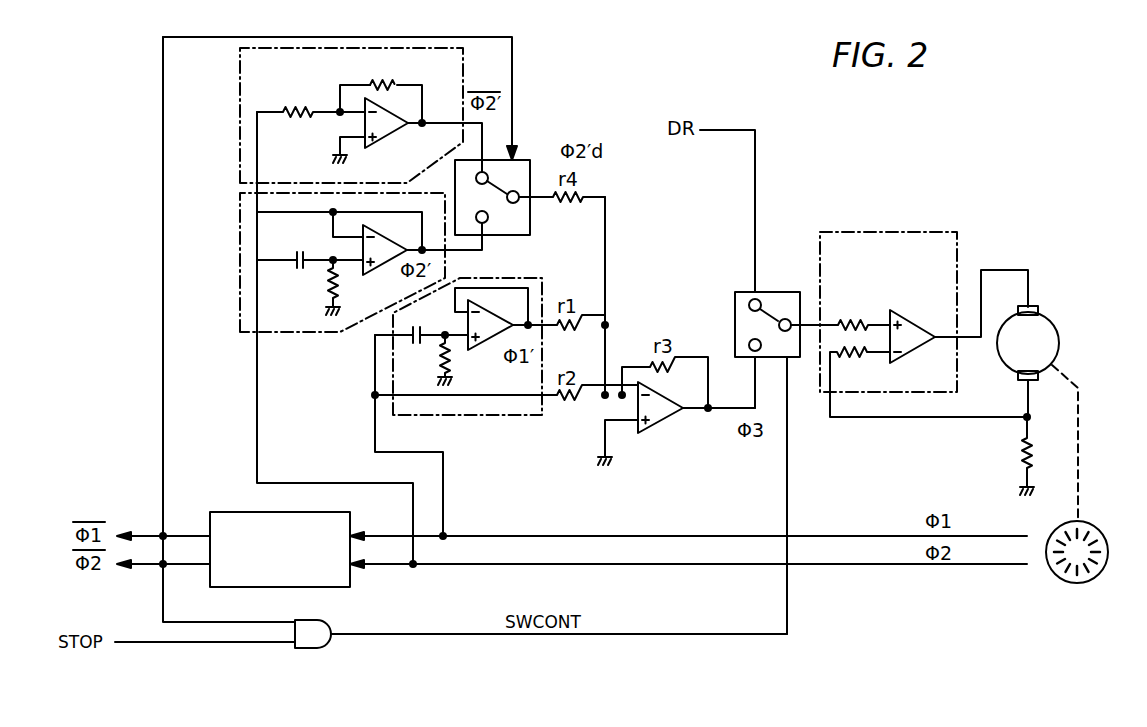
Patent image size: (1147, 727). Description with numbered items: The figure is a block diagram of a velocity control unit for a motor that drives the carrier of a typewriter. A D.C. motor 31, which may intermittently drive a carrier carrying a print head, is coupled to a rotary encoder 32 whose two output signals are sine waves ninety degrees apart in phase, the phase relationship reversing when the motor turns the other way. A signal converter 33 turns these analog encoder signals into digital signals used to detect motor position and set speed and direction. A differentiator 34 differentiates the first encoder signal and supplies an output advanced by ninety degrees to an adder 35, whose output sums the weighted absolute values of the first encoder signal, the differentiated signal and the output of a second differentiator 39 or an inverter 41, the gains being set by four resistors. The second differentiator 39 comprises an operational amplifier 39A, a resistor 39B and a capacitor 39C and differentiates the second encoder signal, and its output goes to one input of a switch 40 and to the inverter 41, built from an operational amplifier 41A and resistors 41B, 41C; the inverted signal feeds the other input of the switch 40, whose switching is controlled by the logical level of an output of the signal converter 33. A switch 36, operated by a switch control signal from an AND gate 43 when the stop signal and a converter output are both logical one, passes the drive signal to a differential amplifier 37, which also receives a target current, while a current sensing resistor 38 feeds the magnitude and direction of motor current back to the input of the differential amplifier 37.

The D.C. motor 31 is at (1055, 322).
The rotary encoder 32 is at (1090, 525).
The signal converter 33 is at (232, 512).
The differentiator 34 is at (490, 416).
The adder 35 is at (665, 318).
The switch 36 is at (735, 310).
The differential amplifier 37 is at (895, 232).
The current sensing resistor 38 is at (1020, 458).
The second differentiator 39 is at (337, 262).
The operational amplifier 39A is at (392, 263).
The resistor 39B is at (323, 282).
The capacitor 39C is at (295, 254).
The switch 40 is at (523, 160).
The inverter 41 is at (337, 115).
The operational amplifier 41A is at (395, 145).
The resistor 41B is at (295, 101).
The resistor 41C is at (386, 81).
The AND gate 43 is at (310, 650).